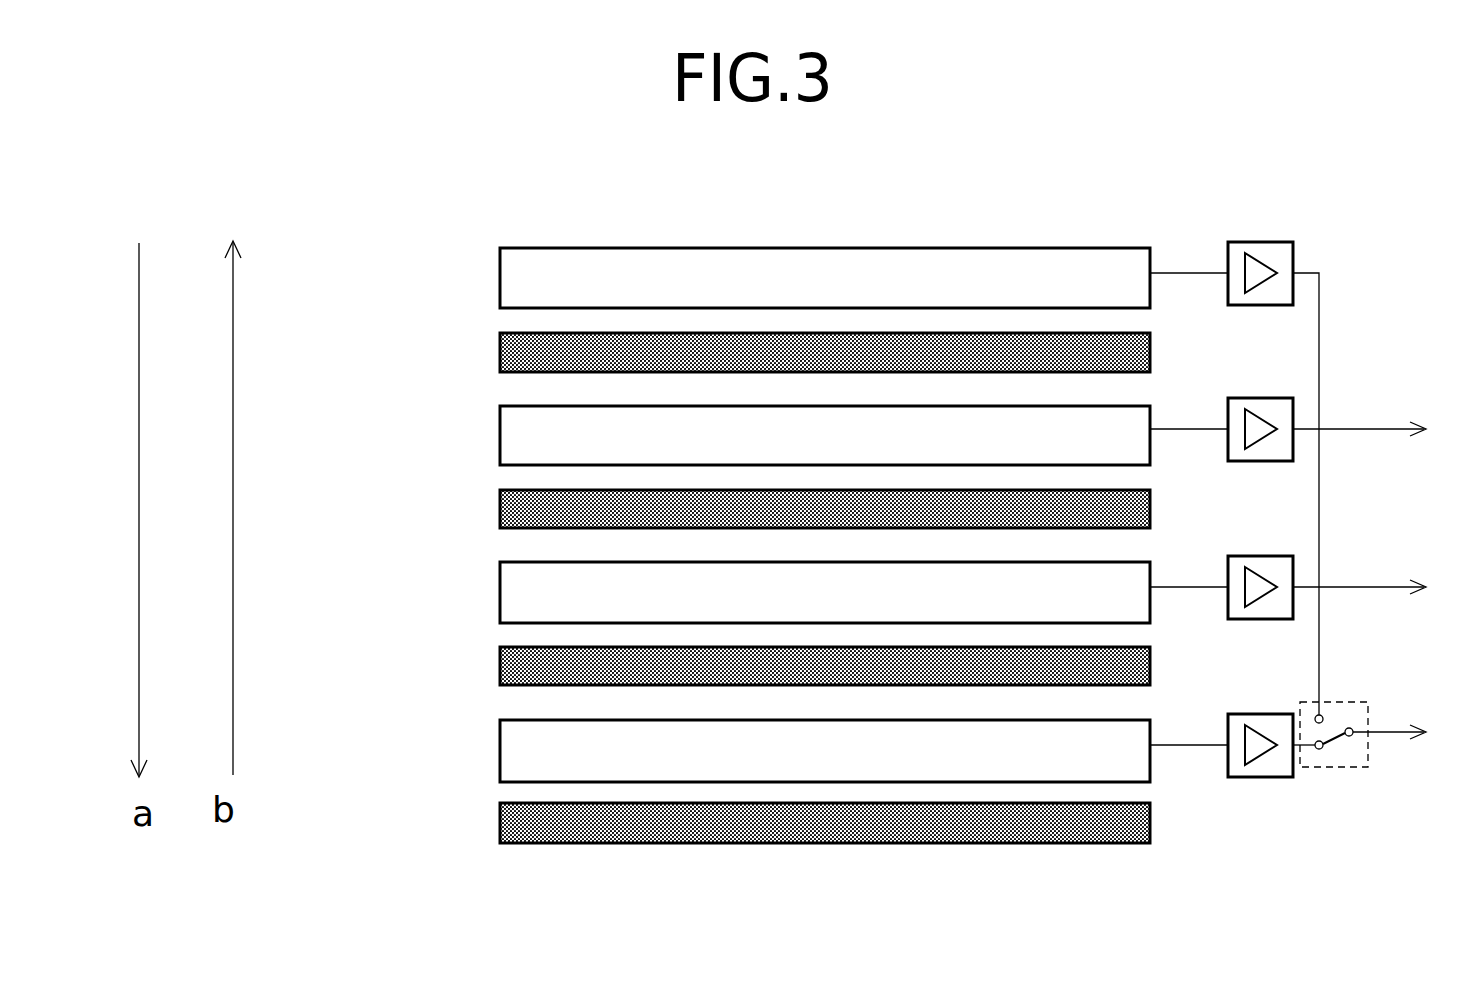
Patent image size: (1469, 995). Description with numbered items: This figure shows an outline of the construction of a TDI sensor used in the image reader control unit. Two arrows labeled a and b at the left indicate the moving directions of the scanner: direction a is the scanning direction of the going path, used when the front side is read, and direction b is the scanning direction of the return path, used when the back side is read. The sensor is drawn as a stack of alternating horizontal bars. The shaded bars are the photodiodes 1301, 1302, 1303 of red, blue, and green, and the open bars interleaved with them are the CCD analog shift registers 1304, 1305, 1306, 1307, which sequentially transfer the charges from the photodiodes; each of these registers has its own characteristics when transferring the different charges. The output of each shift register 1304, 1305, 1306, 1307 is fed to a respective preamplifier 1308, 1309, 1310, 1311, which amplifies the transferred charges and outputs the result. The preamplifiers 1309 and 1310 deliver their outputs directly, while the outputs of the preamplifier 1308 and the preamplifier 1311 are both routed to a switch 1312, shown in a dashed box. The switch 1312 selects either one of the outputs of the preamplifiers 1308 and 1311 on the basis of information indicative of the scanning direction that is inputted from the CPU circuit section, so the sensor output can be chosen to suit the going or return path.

The photodiode of red 1301 is at (500, 350).
The photodiode of blue 1302 is at (500, 507).
The photodiode of green 1303 is at (500, 665).
The CCD analog shift register 1304 is at (500, 270).
The CCD analog shift register 1305 is at (500, 429).
The CCD analog shift register 1306 is at (500, 587).
The CCD analog shift register 1307 is at (500, 744).
The preamplifier 1308 is at (1278, 243).
The preamplifier 1309 is at (1278, 399).
The preamplifier 1310 is at (1278, 557).
The preamplifier 1311 is at (1278, 715).
The switch 1312 is at (1344, 768).